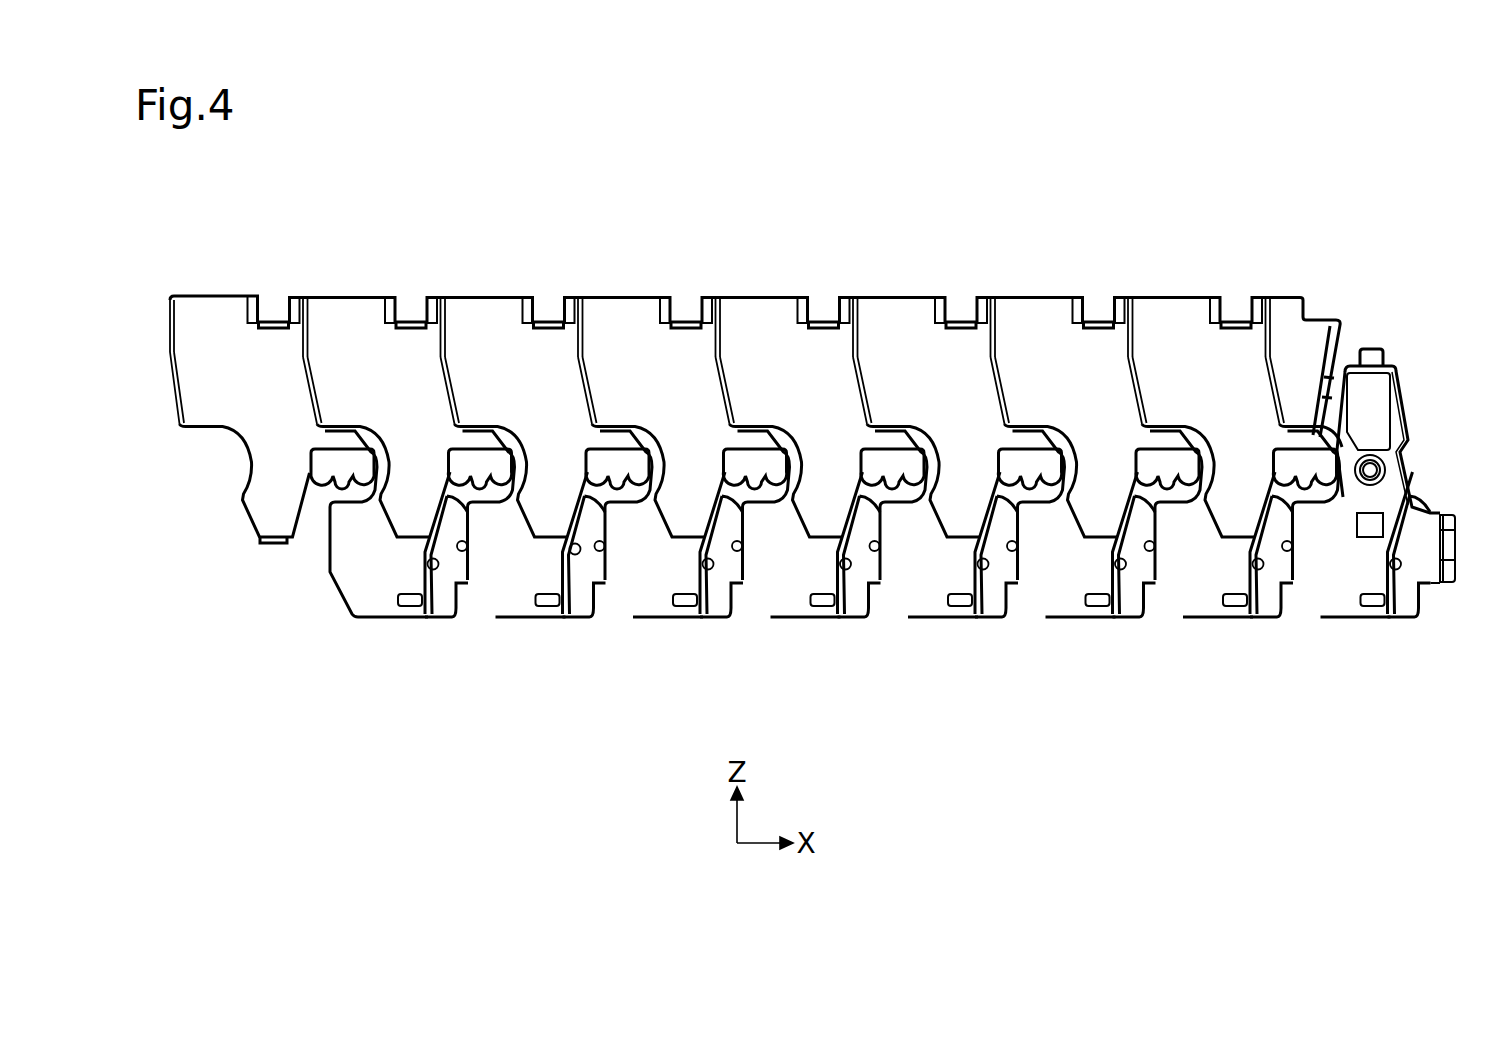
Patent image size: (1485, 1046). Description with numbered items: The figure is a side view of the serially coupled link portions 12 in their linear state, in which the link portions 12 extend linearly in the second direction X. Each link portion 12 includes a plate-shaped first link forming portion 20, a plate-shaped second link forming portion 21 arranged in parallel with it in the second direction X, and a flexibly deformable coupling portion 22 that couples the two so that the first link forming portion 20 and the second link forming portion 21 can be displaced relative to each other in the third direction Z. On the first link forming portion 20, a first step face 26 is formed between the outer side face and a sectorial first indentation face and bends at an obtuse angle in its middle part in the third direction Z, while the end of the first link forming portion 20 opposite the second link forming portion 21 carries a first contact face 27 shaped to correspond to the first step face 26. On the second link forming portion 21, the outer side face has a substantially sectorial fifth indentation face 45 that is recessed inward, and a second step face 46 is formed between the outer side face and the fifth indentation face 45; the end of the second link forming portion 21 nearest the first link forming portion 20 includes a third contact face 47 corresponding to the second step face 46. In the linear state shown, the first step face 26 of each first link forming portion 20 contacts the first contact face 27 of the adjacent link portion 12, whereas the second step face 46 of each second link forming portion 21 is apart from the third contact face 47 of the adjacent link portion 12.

The link portion 12 is at (1169, 291).
The first link forming portion 20 is at (1022, 291).
The second link forming portion 21 is at (1208, 620).
The coupling portion 22 is at (1036, 489).
The first step face 26 is at (1141, 381).
The first contact face 27 is at (1127, 348).
The fifth indentation face 45 is at (1144, 593).
The second step face 46 is at (1391, 566).
The third contact face 47 is at (1156, 549).